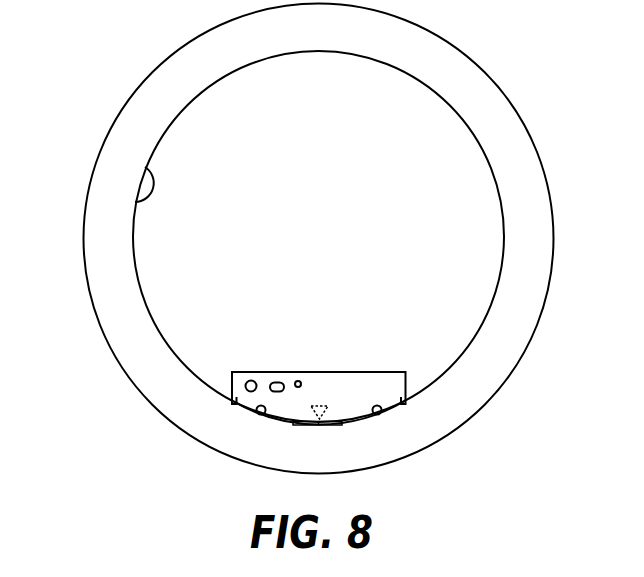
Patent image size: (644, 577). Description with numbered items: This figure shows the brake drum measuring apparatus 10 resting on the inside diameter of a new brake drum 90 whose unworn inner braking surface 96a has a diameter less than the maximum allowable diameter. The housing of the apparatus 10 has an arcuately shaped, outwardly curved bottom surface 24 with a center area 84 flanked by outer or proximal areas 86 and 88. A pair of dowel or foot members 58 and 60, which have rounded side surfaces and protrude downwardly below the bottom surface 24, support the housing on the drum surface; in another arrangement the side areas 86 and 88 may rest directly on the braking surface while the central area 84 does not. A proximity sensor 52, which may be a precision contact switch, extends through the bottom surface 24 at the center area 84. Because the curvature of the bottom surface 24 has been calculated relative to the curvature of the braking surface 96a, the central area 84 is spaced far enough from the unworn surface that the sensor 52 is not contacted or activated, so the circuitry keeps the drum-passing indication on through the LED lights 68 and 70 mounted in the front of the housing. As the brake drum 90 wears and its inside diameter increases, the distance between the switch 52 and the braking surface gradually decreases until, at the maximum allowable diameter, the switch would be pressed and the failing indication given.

The brake drum measuring apparatus 10 is at (363, 383).
The bottom surface 24 is at (342, 425).
The proximity sensor 52 is at (320, 405).
The dowel or foot member 58 is at (260, 416).
The dowel or foot member 60 is at (382, 415).
The LED light 68 is at (249, 380).
The LED light 70 is at (280, 381).
The center area 84 is at (293, 425).
The outer or proximal area 86 is at (244, 412).
The outer or proximal area 88 is at (391, 414).
The brake drum 90 is at (192, 82).
The unworn inner braking surface 96a is at (152, 173).